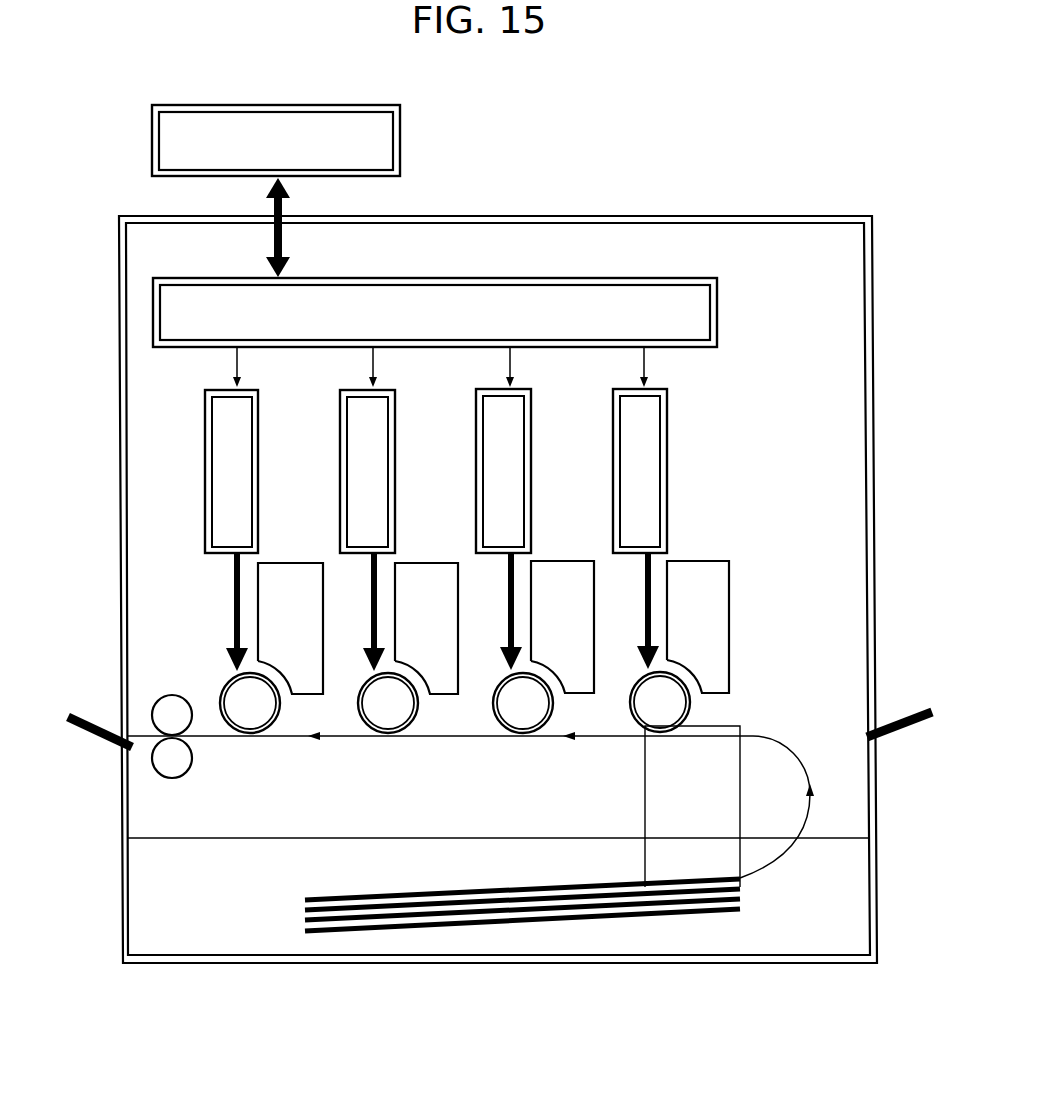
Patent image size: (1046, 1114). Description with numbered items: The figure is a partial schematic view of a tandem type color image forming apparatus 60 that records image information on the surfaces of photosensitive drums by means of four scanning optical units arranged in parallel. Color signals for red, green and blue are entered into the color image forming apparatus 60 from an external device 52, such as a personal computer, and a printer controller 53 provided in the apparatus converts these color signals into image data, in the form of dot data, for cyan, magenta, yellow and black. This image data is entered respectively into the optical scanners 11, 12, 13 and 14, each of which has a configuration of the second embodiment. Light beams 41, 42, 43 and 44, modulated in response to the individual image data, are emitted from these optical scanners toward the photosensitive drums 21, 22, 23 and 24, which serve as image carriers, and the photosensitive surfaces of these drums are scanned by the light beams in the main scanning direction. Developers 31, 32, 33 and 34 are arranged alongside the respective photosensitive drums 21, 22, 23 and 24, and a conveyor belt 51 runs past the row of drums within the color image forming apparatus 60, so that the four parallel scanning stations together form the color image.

The optical scanner 11 is at (225, 432).
The optical scanner 12 is at (360, 432).
The optical scanner 13 is at (497, 430).
The optical scanner 14 is at (632, 430).
The photosensitive drum 21 is at (252, 710).
The photosensitive drum 22 is at (390, 710).
The photosensitive drum 23 is at (525, 710).
The photosensitive drum 24 is at (660, 712).
The developer 31 is at (294, 564).
The developer 32 is at (431, 564).
The developer 33 is at (567, 562).
The developer 34 is at (703, 562).
The light beam 41 is at (218, 367).
The light beam 42 is at (354, 367).
The light beam 43 is at (490, 367).
The light beam 44 is at (625, 367).
The conveyor belt 51 is at (452, 738).
The external device 52 is at (393, 137).
The printer controller 53 is at (713, 312).
The color image forming apparatus 60 is at (751, 216).